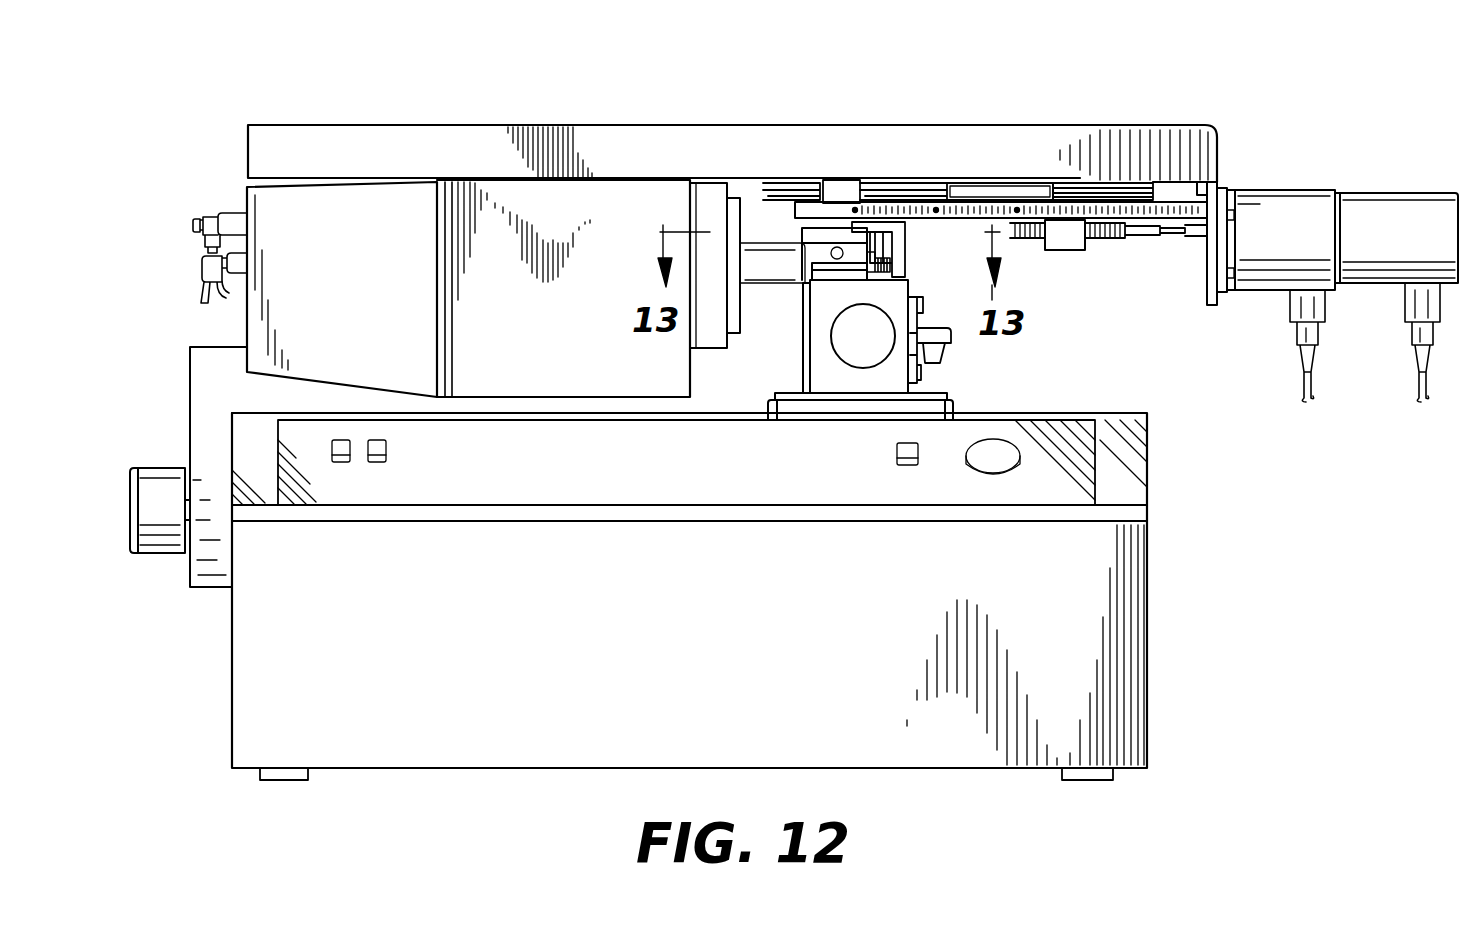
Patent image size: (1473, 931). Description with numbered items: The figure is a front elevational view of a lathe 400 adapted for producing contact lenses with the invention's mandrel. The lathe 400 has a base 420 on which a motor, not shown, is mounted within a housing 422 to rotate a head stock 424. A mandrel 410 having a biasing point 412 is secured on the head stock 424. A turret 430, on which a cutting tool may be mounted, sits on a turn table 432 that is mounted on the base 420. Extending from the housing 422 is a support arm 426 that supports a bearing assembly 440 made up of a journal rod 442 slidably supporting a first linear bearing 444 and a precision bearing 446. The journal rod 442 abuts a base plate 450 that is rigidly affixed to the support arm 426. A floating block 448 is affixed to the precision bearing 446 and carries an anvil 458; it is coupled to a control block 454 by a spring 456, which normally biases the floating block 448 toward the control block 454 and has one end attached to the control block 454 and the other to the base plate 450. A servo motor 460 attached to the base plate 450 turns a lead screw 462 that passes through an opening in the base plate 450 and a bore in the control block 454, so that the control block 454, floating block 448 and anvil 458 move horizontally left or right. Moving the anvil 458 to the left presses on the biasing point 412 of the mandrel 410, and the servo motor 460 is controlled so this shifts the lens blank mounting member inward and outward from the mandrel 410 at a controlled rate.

The lathe 400 is at (465, 82).
The mandrel 410 is at (835, 277).
The biasing point 412 is at (888, 268).
The base 420 is at (694, 478).
The housing 422 is at (576, 340).
The head stock 424 is at (775, 255).
The support arm 426 is at (630, 148).
The turret 430 is at (893, 368).
The turn table 432 is at (950, 404).
The bearing assembly 440 is at (1010, 187).
The journal rod 442 is at (1102, 187).
The first linear bearing 444 is at (968, 187).
The precision bearing 446 is at (845, 195).
The floating block 448 is at (812, 200).
The base plate 450 is at (1208, 275).
The control block 454 is at (997, 220).
The spring 456 is at (1197, 190).
The anvil 458 is at (898, 240).
The servo motor 460 is at (1360, 205).
The lead screw 462 is at (1022, 240).